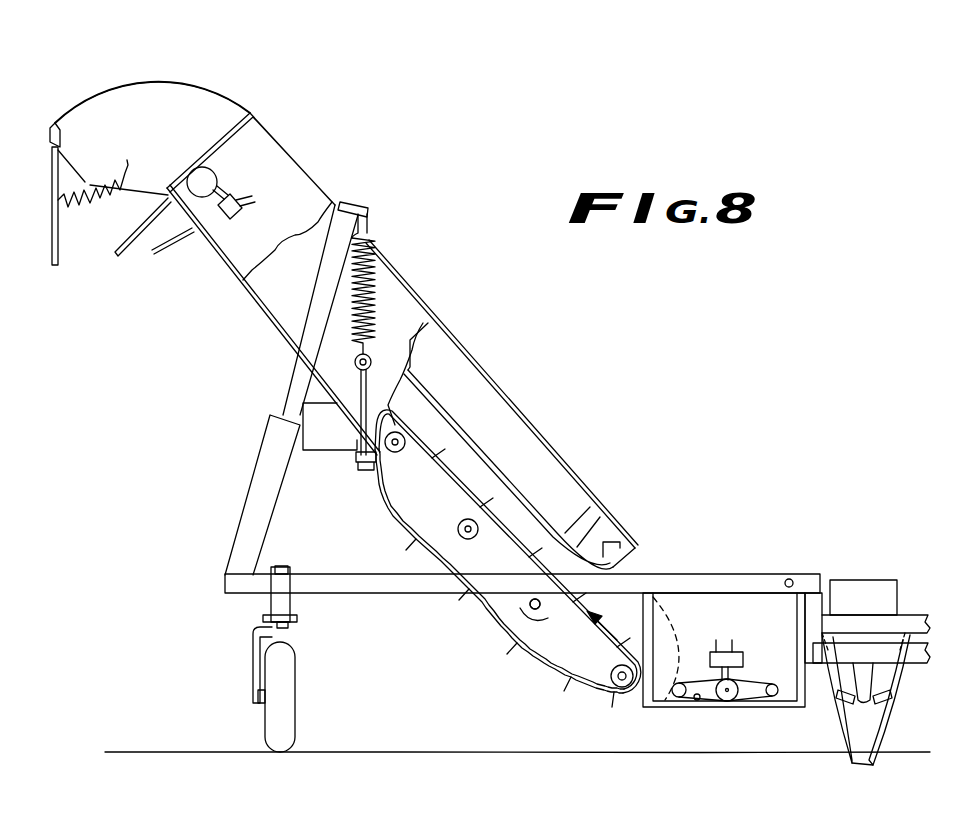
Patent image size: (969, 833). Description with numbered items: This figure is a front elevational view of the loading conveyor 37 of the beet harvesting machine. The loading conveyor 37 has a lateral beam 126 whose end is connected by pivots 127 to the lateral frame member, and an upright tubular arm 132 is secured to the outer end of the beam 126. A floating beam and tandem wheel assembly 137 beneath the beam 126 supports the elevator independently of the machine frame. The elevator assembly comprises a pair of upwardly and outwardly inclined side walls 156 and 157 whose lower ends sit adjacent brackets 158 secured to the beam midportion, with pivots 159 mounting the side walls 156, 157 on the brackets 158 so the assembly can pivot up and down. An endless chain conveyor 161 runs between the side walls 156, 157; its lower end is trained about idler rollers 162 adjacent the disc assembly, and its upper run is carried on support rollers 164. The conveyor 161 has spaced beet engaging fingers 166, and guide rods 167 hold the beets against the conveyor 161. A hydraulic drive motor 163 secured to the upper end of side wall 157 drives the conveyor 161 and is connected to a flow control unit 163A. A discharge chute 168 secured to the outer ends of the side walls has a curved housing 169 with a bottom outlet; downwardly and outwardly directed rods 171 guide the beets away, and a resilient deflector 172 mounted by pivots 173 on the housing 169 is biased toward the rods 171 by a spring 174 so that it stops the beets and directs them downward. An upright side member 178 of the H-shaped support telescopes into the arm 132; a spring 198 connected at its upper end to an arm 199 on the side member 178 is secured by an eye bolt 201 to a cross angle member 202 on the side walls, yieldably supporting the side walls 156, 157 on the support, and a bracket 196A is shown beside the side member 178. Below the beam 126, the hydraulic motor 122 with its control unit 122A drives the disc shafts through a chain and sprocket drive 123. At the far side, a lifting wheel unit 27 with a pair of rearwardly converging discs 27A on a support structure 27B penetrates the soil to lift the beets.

The loading conveyor 37 is at (532, 336).
The discharge chute 168 is at (121, 78).
The curved housing 169 is at (180, 100).
The pivots 173 is at (55, 128).
The deflector 172 is at (57, 265).
The spring 174 is at (83, 200).
The rods or guides 171 is at (118, 256).
The hydraulic drive motor 163 is at (203, 196).
The flow control unit 163A is at (242, 216).
The side member 178 is at (290, 370).
The upright tubular arm 132 is at (262, 477).
The arm 199 is at (372, 212).
The spring 198 is at (372, 245).
The eye bolt 201 is at (373, 390).
The cross angle member 202 is at (372, 464).
The housing 196A is at (316, 395).
The side wall 157 is at (393, 307).
The side wall 156 is at (513, 428).
The guide rods 167 is at (527, 490).
The endless chain conveyor 161 is at (420, 533).
The support rollers 164 is at (398, 452).
The pivots 159 is at (529, 607).
The brackets 158 is at (540, 614).
The beet engaging fingers 166 is at (588, 692).
The idler rollers 162 is at (618, 688).
The lateral beam 126 is at (716, 580).
The pivots 127 is at (789, 578).
The floating beam and tandem wheel assembly 137 is at (205, 658).
The hydraulic motor 122 is at (726, 702).
The control unit 122A is at (745, 657).
The chain and sprocket drive 123 is at (678, 698).
The support structure 27B is at (865, 655).
The rearwardly converging discs 27A is at (835, 738).
The lifting wheel units 27 is at (858, 776).